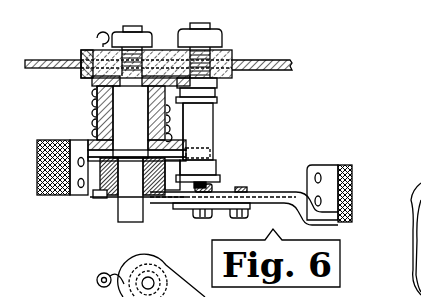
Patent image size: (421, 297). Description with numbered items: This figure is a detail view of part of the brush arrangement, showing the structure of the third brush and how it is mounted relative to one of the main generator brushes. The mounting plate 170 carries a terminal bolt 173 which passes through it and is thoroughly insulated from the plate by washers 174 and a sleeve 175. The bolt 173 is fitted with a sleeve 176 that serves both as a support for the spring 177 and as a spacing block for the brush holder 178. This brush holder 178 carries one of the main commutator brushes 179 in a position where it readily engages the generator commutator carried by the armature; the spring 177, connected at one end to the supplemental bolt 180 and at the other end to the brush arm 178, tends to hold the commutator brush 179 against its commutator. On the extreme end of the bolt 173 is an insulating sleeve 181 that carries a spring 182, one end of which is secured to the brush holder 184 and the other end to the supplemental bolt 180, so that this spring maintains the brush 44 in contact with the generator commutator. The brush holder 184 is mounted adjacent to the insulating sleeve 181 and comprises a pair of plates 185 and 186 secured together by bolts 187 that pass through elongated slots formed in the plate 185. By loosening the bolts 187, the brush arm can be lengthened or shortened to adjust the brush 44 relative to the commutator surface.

The mounting plate 170 is at (267, 63).
The terminal bolt 173 is at (137, 122).
The washers 174 is at (163, 50).
The sleeve 175 is at (88, 59).
The sleeve 176 is at (107, 103).
The spring 177 is at (90, 132).
The brush holder 178 is at (187, 144).
The main commutator brush 179 is at (47, 196).
The supplemental bolt 180 is at (204, 38).
The insulating sleeve 181 is at (115, 182).
The spring 182 is at (97, 188).
The brush holder 184 is at (256, 198).
The plate 185 is at (185, 200).
The plate 186 is at (168, 198).
The bolts 187 is at (241, 192).
The brush 44 is at (350, 165).